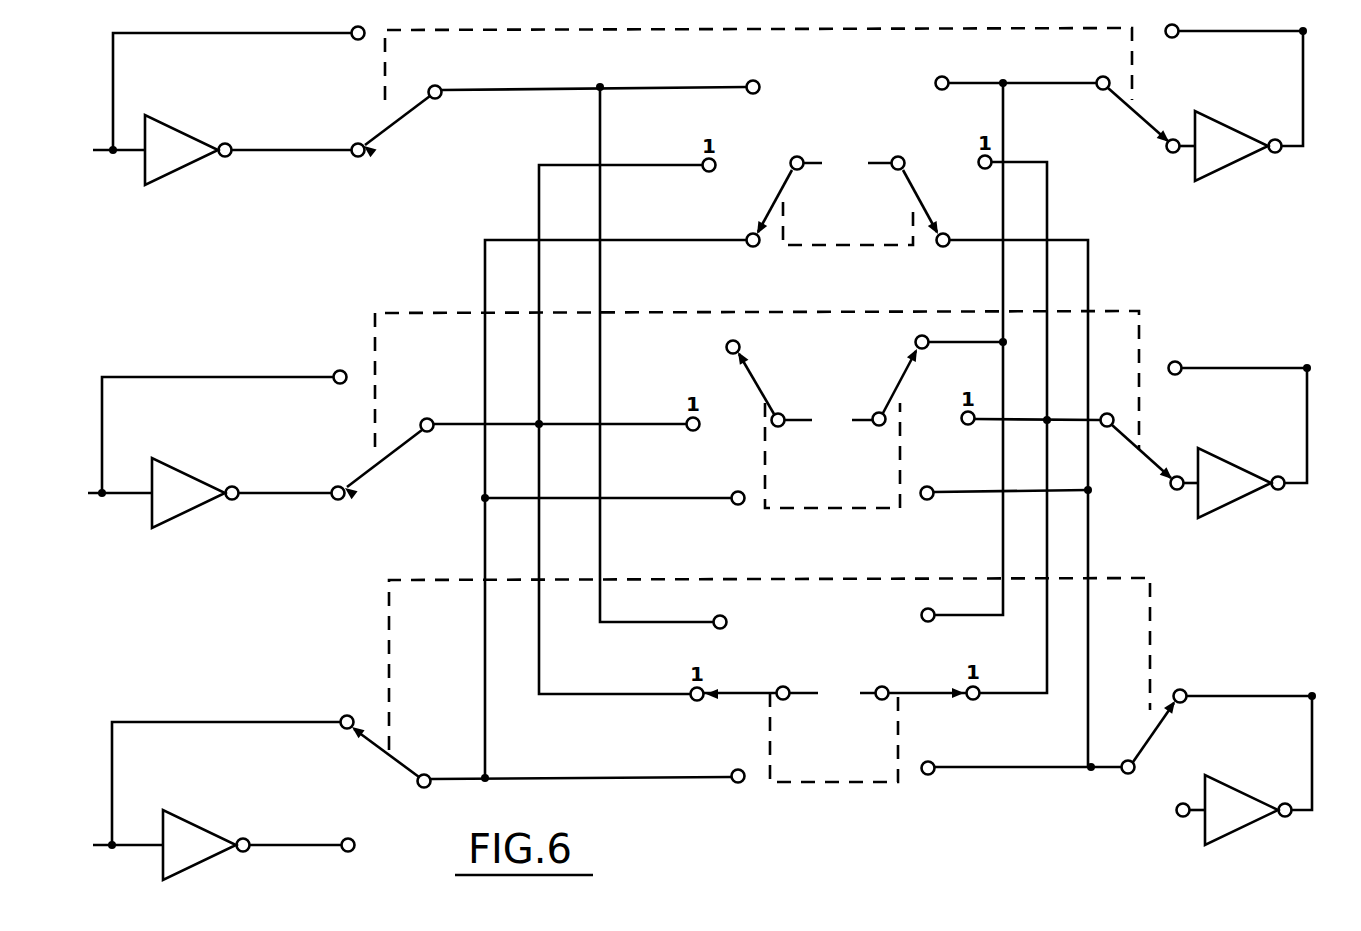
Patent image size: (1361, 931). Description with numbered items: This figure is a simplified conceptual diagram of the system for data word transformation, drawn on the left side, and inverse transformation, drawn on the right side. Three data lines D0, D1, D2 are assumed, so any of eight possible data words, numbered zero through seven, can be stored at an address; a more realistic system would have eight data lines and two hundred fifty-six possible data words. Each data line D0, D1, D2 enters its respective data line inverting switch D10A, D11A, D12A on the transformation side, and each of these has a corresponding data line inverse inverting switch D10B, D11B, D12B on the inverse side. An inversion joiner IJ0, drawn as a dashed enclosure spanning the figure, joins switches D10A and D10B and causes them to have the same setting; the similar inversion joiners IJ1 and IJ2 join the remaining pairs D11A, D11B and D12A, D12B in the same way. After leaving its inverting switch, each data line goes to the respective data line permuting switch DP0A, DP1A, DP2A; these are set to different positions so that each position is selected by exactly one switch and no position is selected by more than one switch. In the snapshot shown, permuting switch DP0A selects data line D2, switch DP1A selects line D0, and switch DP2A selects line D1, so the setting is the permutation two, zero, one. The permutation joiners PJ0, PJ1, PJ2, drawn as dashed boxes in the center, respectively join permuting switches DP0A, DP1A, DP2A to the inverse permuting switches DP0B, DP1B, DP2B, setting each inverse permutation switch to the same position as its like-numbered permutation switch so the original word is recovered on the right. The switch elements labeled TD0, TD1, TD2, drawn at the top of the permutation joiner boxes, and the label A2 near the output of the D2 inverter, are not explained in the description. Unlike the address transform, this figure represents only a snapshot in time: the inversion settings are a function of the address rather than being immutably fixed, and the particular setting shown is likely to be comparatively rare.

The inversion joiner IJ0 is at (758, 50).
The inversion joiner IJ1 is at (757, 366).
The inversion joiner IJ2 is at (769, 650).
The permutation joiner PJ0 is at (848, 236).
The permutation joiner PJ1 is at (832, 469).
The permutation joiner PJ2 is at (833, 751).
The data line inverting switch D10A is at (410, 106).
The data line inverse inverting switch D10B is at (1112, 94).
The data line inverting switch D11A is at (394, 440).
The data line inverse inverting switch D11B is at (1134, 433).
The data line inverting switch D12A is at (403, 755).
The data line inverse inverting switch D12B is at (1137, 735).
The data line permuting switch DP0A is at (782, 78).
The data line inverse permuting switch DP0B is at (914, 74).
The data line permuting switch DP1A is at (761, 336).
The data line inverse permuting switch DP1B is at (889, 332).
The data line permuting switch DP2A is at (751, 616).
The data line inverse permuting switch DP2B is at (896, 605).
The test data switch 0 TD0 is at (848, 193).
The test data switch 1 TD1 is at (828, 389).
The test data switch 2 TD2 is at (835, 693).
The data line D0 is at (700, 102).
The data line D1 is at (705, 442).
The data line D2 is at (708, 782).
The address line A2 is at (375, 875).